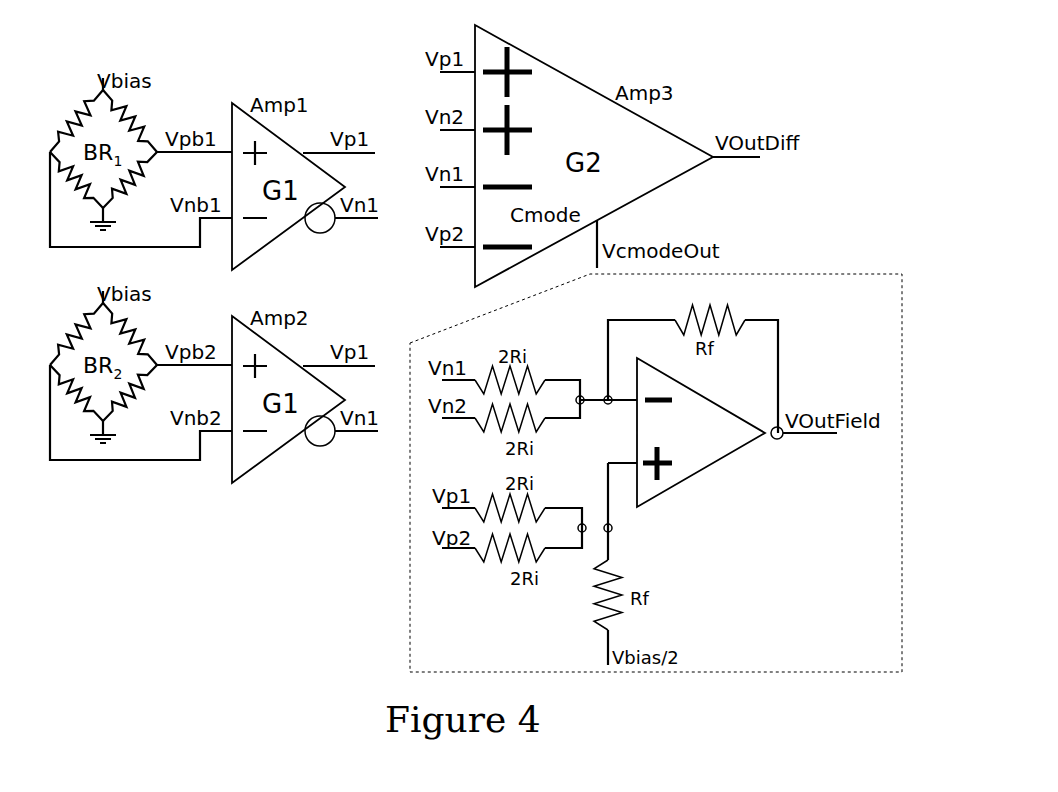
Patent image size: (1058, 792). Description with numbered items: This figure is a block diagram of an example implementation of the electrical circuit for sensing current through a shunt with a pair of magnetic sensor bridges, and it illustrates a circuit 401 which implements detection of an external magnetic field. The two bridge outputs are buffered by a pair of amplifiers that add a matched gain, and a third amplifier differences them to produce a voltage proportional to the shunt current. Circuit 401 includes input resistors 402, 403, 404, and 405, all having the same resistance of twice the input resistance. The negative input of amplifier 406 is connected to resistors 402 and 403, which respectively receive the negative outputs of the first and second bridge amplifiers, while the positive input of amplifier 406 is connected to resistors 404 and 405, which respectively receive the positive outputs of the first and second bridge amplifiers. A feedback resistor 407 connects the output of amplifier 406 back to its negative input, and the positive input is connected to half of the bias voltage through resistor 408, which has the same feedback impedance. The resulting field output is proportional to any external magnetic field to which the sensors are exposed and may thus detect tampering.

The circuit 401 is at (758, 274).
The input resistor 402 is at (540, 367).
The input resistor 403 is at (542, 447).
The input resistor 404 is at (548, 503).
The input resistor 405 is at (498, 567).
The amplifier 406 is at (690, 477).
The resistor 407 is at (740, 308).
The resistor 408 is at (662, 603).